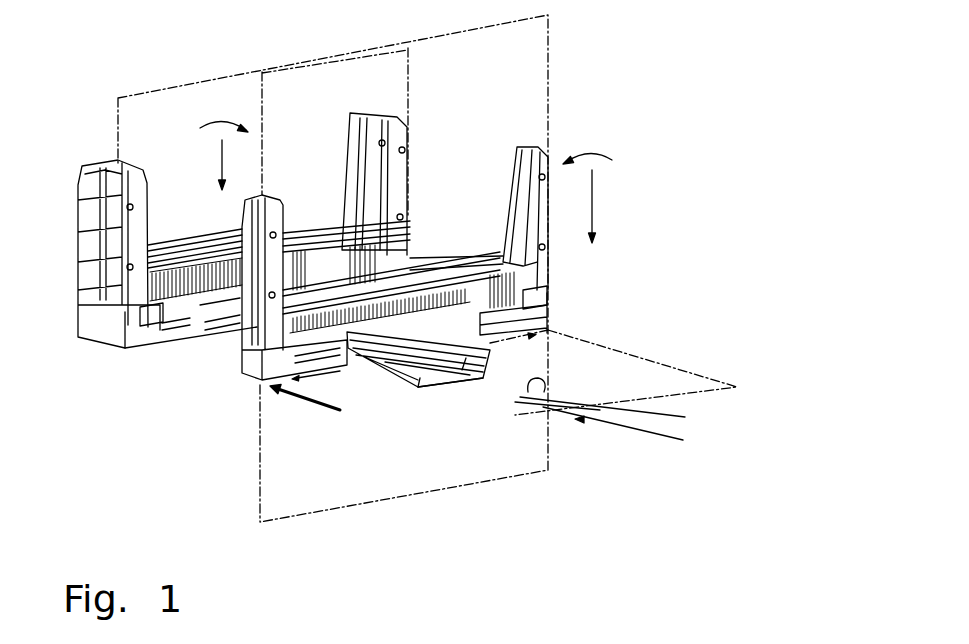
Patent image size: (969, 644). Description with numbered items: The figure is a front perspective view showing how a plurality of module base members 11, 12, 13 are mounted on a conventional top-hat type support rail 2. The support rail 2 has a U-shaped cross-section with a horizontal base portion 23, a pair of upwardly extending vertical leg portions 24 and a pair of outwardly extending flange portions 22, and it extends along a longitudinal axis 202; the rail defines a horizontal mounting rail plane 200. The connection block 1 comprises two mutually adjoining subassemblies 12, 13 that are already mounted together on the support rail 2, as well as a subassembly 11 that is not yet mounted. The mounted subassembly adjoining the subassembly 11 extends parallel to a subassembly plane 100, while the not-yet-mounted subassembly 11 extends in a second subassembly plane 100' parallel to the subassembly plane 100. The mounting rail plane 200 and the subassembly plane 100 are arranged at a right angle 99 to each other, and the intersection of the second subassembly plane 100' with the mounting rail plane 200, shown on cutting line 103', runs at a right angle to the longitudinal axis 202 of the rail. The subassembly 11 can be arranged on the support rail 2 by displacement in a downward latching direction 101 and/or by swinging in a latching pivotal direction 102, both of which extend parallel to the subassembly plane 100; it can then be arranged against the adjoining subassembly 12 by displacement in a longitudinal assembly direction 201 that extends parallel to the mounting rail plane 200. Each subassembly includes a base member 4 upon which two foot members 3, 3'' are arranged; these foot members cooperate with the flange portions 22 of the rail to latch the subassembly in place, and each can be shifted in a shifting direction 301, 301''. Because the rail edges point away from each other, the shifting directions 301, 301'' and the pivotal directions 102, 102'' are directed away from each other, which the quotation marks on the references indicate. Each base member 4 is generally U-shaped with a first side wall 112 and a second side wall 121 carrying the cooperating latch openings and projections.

The connection block 1 is at (102, 85).
The subassembly plane 100 is at (301, 268).
The second subassembly plane 100' is at (287, 559).
The downward latching direction 101 is at (222, 157).
The latching pivotal direction 102 is at (630, 132).
The latching pivotal direction 102'' is at (202, 70).
The module base member 13 is at (352, 157).
The module base member 12 is at (398, 183).
The module base member 11 is at (527, 185).
The first side wall 112 is at (498, 238).
The second side wall 121 is at (130, 238).
The base member 4 is at (270, 322).
The foot member 3 is at (538, 315).
The foot member 3'' is at (267, 323).
The support rail 2 is at (427, 400).
The flange portions 22 is at (390, 360).
The vertical leg portions 24 is at (418, 387).
The horizontal base portion 23 is at (433, 388).
The longitudinal assembly direction 201 is at (310, 402).
The shifting direction 301'' is at (284, 498).
The shifting direction 301 is at (490, 441).
The mounting rail plane 200 is at (638, 380).
The right angle 99 is at (617, 404).
The cutting line 103' is at (622, 432).
The longitudinal axis 202 is at (622, 430).